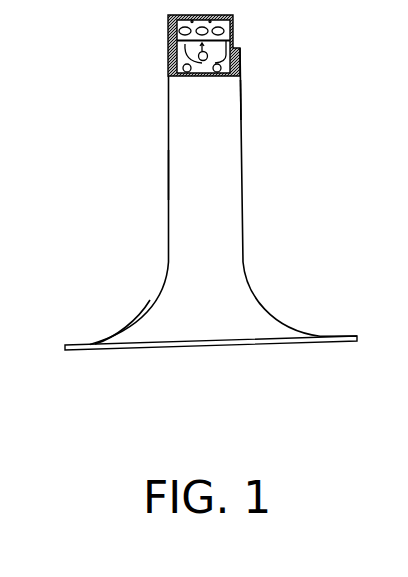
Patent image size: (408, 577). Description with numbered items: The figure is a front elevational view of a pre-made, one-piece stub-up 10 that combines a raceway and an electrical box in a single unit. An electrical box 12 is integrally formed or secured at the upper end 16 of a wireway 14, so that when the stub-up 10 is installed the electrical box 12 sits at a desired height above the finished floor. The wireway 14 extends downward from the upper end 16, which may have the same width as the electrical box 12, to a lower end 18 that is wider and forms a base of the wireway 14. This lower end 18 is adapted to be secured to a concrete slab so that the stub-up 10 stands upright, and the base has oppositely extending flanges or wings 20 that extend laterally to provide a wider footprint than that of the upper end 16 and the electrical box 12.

The stub-up 10 is at (222, 138).
The electrical box 12 is at (187, 43).
The wireway 14 is at (190, 166).
The upper end 16 is at (240, 100).
The lower end 18 is at (150, 329).
The flanges or wings 20 is at (82, 345).